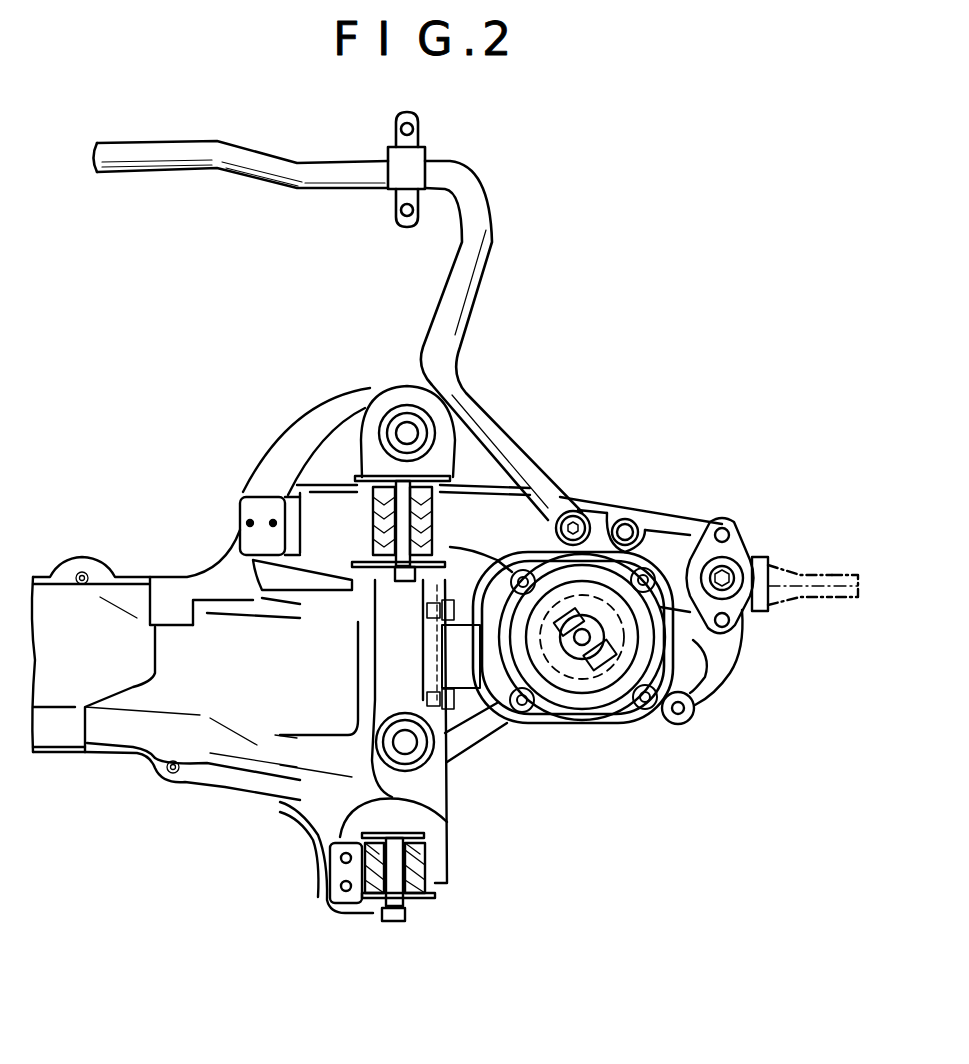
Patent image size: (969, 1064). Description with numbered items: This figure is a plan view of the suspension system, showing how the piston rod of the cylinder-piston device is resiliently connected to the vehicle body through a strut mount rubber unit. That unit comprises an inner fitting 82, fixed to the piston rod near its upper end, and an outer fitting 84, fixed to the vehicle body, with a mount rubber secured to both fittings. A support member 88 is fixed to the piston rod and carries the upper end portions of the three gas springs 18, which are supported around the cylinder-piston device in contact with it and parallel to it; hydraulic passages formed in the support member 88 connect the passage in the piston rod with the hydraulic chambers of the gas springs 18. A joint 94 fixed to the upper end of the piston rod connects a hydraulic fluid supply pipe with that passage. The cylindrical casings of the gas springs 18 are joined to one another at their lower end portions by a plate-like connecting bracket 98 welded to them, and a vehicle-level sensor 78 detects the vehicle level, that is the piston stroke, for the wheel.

The gas spring 18 is at (552, 552).
The vehicle-level sensor 78 is at (477, 706).
The inner fitting 82 is at (574, 727).
The outer fitting 84 is at (627, 713).
The support member 88 is at (488, 620).
The joint 94 is at (603, 727).
The connecting bracket 98 is at (480, 668).